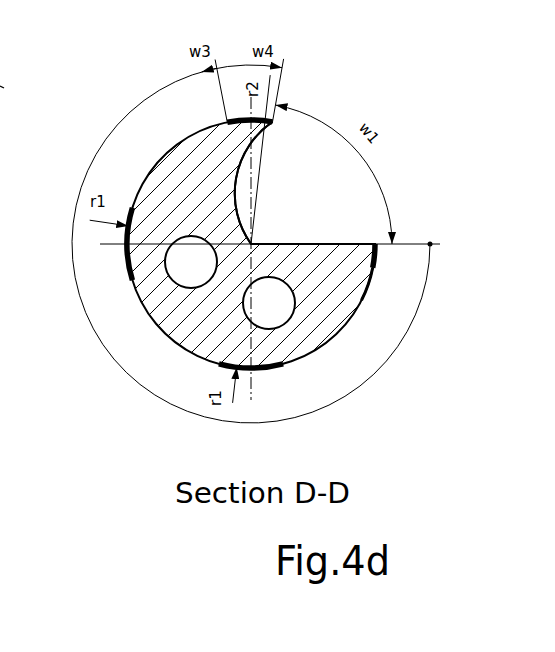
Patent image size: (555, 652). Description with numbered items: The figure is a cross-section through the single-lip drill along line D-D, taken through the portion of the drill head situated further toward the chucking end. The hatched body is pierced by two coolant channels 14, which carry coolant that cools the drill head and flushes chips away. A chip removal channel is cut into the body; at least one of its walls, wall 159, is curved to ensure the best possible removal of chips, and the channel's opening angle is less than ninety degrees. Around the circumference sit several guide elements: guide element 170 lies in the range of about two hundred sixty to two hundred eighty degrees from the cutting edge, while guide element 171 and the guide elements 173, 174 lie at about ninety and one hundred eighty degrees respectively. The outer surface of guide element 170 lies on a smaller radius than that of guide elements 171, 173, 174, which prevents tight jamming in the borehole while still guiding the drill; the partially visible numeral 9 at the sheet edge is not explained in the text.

The coolant channel 14 is at (266, 304).
The wall of the chip removal channel 159 is at (241, 176).
The guide element 170 is at (271, 115).
The guide element 171 is at (374, 263).
The guide element 173 is at (268, 370).
The guide element 174 is at (124, 252).
The drill body 9 is at (6, 95).